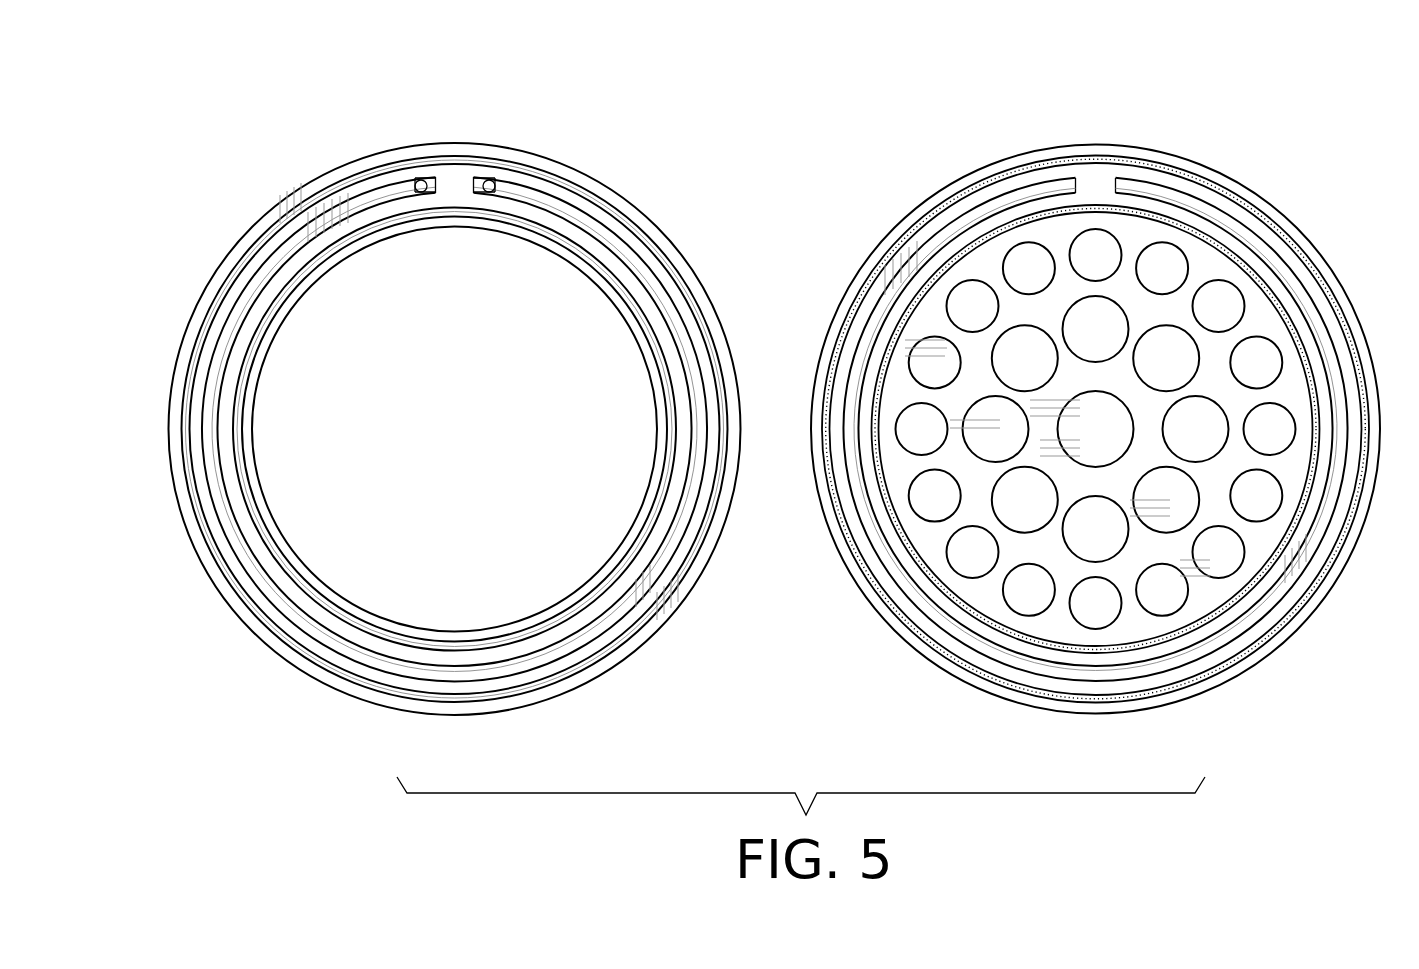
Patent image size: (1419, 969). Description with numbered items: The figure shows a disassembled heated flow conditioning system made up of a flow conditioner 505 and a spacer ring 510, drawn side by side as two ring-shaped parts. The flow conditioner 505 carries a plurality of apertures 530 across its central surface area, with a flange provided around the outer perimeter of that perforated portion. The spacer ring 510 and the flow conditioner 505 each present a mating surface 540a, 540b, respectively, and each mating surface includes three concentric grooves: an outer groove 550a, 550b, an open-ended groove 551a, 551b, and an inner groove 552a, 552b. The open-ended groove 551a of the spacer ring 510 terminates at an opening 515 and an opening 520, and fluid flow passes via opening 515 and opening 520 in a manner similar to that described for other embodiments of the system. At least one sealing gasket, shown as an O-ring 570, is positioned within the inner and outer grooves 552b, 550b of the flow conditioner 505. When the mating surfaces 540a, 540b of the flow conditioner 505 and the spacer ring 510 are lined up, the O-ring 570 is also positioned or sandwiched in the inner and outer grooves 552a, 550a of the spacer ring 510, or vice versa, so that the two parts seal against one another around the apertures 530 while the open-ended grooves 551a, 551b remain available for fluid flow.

The flow conditioner 505 is at (1107, 414).
The spacer ring 510 is at (475, 445).
The opening 515 is at (418, 180).
The opening 520 is at (493, 180).
The apertures 530 is at (1226, 566).
The mating surface 540a is at (494, 413).
The mating surface 540b is at (1120, 380).
The outer groove 550a is at (607, 195).
The outer groove 550b is at (1043, 166).
The open-ended groove 551a is at (622, 251).
The open-ended groove 551b is at (1145, 190).
The inner groove 552a is at (640, 300).
The inner groove 552b is at (1215, 235).
The O-ring 570 is at (966, 253).